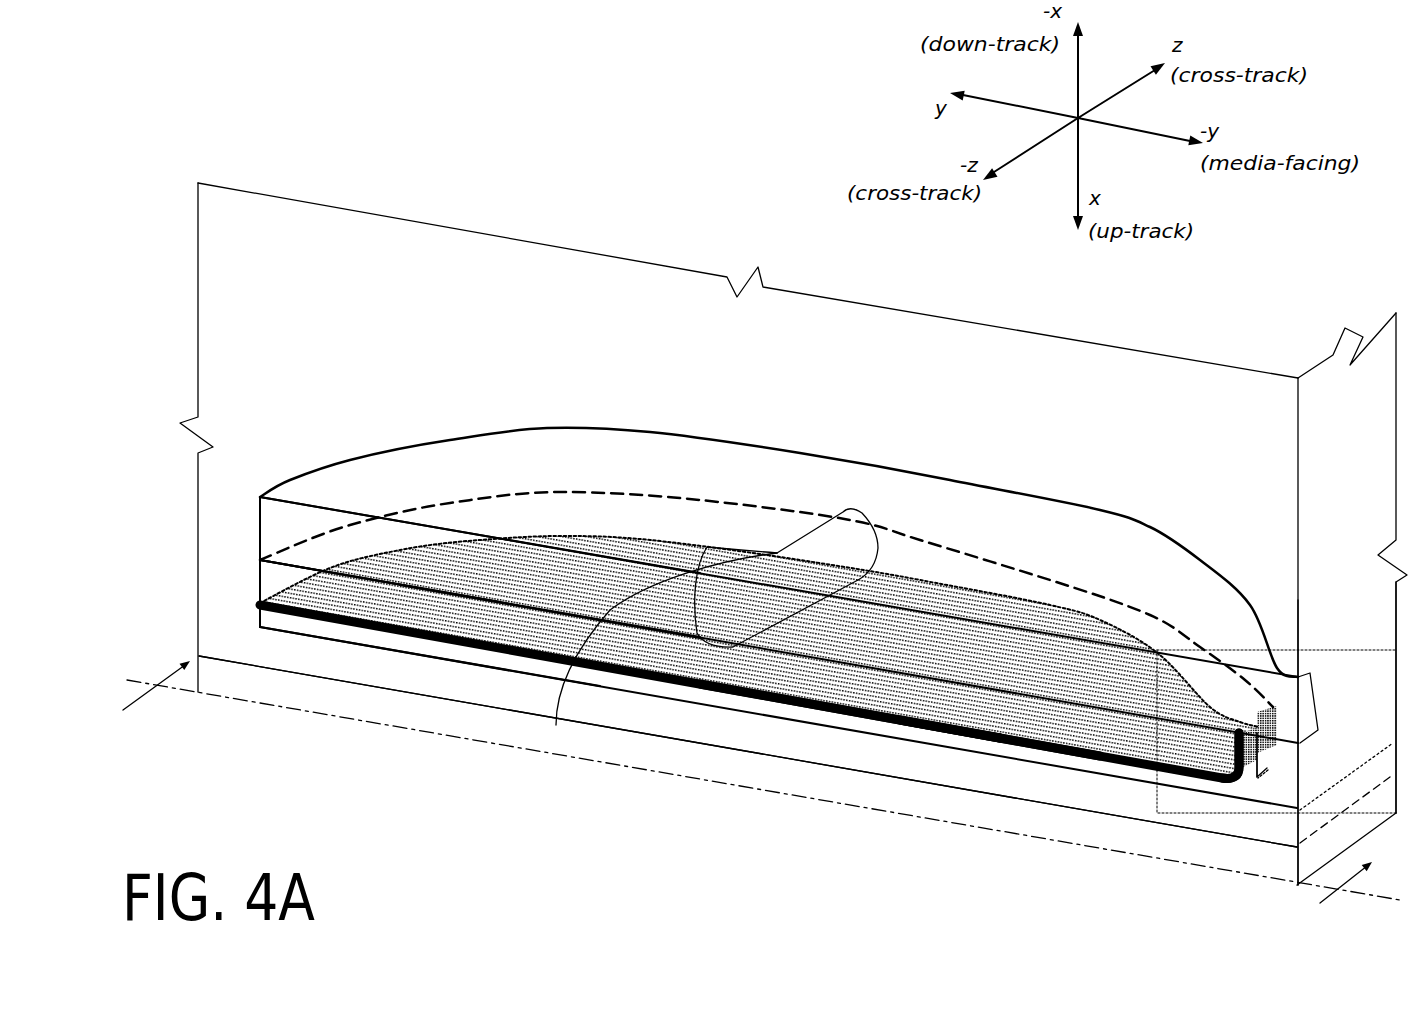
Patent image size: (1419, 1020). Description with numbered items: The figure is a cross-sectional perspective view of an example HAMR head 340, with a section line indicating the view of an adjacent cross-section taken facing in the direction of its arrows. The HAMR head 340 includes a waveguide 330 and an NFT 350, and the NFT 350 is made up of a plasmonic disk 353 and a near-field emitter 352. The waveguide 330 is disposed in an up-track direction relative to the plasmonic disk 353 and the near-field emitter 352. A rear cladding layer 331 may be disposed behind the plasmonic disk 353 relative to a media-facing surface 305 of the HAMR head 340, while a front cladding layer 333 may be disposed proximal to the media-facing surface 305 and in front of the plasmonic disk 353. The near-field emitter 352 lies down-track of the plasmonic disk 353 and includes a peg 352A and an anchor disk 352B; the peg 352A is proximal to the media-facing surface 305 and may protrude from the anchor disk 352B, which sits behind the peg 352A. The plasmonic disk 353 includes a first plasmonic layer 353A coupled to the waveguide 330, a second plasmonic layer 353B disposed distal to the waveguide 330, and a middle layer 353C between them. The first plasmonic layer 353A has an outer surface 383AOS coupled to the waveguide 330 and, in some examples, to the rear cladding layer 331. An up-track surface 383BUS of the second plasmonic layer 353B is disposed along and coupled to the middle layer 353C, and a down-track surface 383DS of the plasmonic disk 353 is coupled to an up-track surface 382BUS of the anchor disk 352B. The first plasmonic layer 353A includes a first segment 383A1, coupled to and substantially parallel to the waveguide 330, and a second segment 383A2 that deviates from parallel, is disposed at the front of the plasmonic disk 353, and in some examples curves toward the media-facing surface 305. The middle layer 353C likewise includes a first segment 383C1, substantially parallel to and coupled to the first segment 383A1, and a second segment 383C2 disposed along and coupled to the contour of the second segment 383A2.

The HAMR head 340 is at (338, 140).
The NFT 350 is at (430, 350).
The near-field emitter 352 is at (246, 529).
The peg 352A is at (1303, 720).
The anchor disk 352B is at (314, 485).
The plasmonic disk 353 is at (246, 592).
The first plasmonic layer 353A is at (417, 645).
The second plasmonic layer 353B is at (520, 632).
The middle layer 353C is at (556, 725).
The rear cladding layer 331 is at (247, 573).
The waveguide 330 is at (765, 750).
The front cladding layer 333 is at (1313, 792).
The media-facing surface 305 is at (1358, 641).
The outer surface 383AOS is at (263, 633).
The up-track surface 383BUS is at (640, 590).
The up-track surface 382BUS is at (777, 552).
The first segment 383C1 is at (1036, 754).
The second segment 383C2 is at (1226, 740).
The first segment 383A1 is at (946, 738).
The second segment 383A2 is at (1240, 776).
The down-track surface 383DS is at (733, 647).